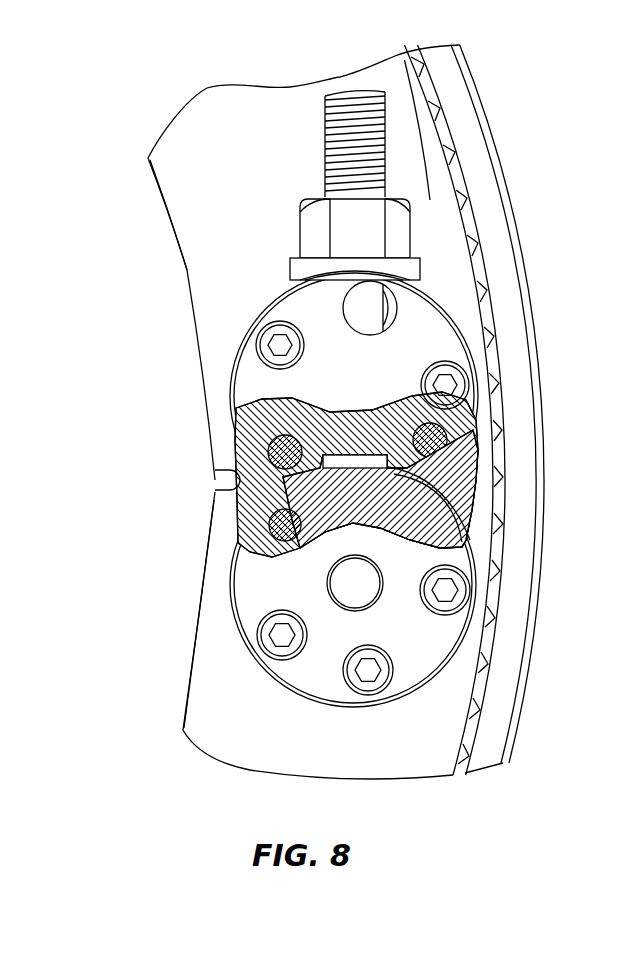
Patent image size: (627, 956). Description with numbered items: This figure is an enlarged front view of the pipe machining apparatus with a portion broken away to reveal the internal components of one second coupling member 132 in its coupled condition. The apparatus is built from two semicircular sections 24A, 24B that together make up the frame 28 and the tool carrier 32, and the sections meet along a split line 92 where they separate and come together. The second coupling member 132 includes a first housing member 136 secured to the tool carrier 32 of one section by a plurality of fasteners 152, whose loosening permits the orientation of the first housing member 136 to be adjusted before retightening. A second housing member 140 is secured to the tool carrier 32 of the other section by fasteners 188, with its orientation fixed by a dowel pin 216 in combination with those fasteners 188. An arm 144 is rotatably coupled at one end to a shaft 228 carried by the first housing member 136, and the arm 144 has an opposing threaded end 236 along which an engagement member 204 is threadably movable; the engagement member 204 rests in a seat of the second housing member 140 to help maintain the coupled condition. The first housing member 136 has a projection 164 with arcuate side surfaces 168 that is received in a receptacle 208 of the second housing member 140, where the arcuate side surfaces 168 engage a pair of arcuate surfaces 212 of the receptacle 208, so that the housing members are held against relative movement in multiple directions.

The semicircular section 24A is at (143, 213).
The semicircular section 24B is at (172, 683).
The frame 28 is at (514, 221).
The tool carrier 32 is at (203, 252).
The split line 92 is at (236, 478).
The second coupling member 132 is at (441, 296).
The first housing member 136 is at (423, 637).
The second housing member 140 is at (430, 347).
The arm 144 is at (418, 143).
The fasteners 152 is at (258, 556).
The projection 164 is at (466, 506).
The arcuate side surfaces 168 is at (275, 442).
The fasteners 188 is at (278, 345).
The engagement member 204 is at (367, 228).
The receptacle 208 is at (455, 530).
The arcuate surfaces 212 is at (262, 506).
The dowel pin 216 is at (410, 465).
The shaft 228 is at (343, 583).
The threaded end 236 is at (327, 148).